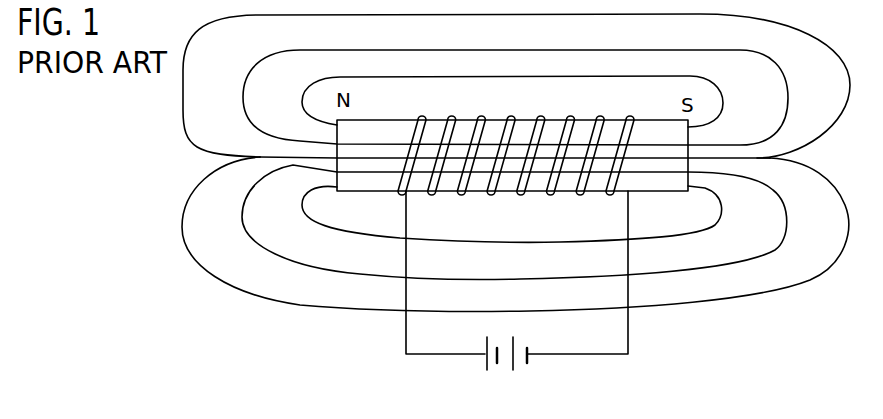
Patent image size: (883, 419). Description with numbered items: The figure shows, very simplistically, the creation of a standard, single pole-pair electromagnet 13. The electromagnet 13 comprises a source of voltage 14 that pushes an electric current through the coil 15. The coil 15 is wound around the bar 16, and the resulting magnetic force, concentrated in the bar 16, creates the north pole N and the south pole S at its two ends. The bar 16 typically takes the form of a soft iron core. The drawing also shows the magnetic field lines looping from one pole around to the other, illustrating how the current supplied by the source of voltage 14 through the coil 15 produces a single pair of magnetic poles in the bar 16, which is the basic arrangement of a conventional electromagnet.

The electromagnet 13 is at (200, 158).
The source of voltage 14 is at (519, 370).
The coil 15 is at (630, 112).
The bar 16 is at (360, 190).